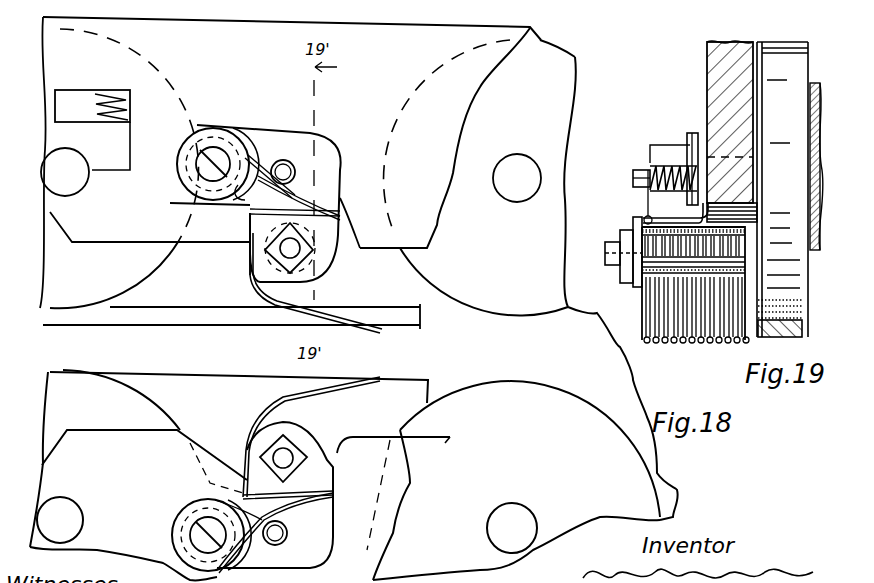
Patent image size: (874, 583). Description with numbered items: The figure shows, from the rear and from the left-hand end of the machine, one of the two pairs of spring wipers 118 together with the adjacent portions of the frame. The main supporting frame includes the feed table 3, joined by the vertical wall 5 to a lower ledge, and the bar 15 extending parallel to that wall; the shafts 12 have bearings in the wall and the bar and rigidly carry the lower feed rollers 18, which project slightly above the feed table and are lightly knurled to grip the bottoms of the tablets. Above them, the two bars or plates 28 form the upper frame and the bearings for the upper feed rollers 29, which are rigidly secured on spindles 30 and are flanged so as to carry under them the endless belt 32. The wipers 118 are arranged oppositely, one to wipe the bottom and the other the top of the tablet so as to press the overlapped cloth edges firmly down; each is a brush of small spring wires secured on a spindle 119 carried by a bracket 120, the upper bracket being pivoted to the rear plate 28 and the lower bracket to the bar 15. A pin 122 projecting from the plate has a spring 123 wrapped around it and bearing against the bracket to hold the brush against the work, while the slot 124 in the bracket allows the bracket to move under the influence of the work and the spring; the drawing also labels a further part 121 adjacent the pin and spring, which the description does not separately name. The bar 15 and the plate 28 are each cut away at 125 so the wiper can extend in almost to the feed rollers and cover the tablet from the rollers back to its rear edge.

In FIG. 18, the feed table 3 is at (424, 378).
In FIG. 18, the vertical wall 5 is at (216, 381).
In FIG. 18, the shafts 12 is at (83, 511).
In FIG. 18, the bar 15 is at (123, 422).
In FIG. 18, the feed rollers 18 is at (86, 370).
In FIG. 18, the bars 28 is at (424, 14).
In FIG. 19, the bars 28 is at (706, 92).
In FIG. 18, the upper feed rollers 29 is at (172, 258).
In FIG. 19, the upper feed rollers 29 is at (808, 268).
In FIG. 18, the spindles or shafts 30 is at (90, 172).
In FIG. 18, the endless belt 32 is at (222, 330).
In FIG. 19, the endless belt 32 is at (772, 338).
In FIG. 18, the wipers 118 is at (366, 345).
In FIG. 19, the wipers 118 is at (654, 344).
In FIG. 18, the spindle 119 is at (310, 250).
In FIG. 19, the spindle 119 is at (648, 290).
In FIG. 18, the bracket 120 is at (247, 235).
In FIG. 19, the bracket 120 is at (642, 220).
In FIG. 18, the pulley 121 is at (197, 158).
In FIG. 19, the pulley 121 is at (686, 150).
In FIG. 18, the pin 122 is at (285, 172).
In FIG. 19, the pin 122 is at (633, 179).
In FIG. 18, the spring 123 is at (290, 193).
In FIG. 19, the spring 123 is at (651, 150).
In FIG. 18, the slot 124 is at (280, 156).
In FIG. 18, the cut-away 125 is at (360, 217).
In FIG. 19, the cut-away 125 is at (740, 203).